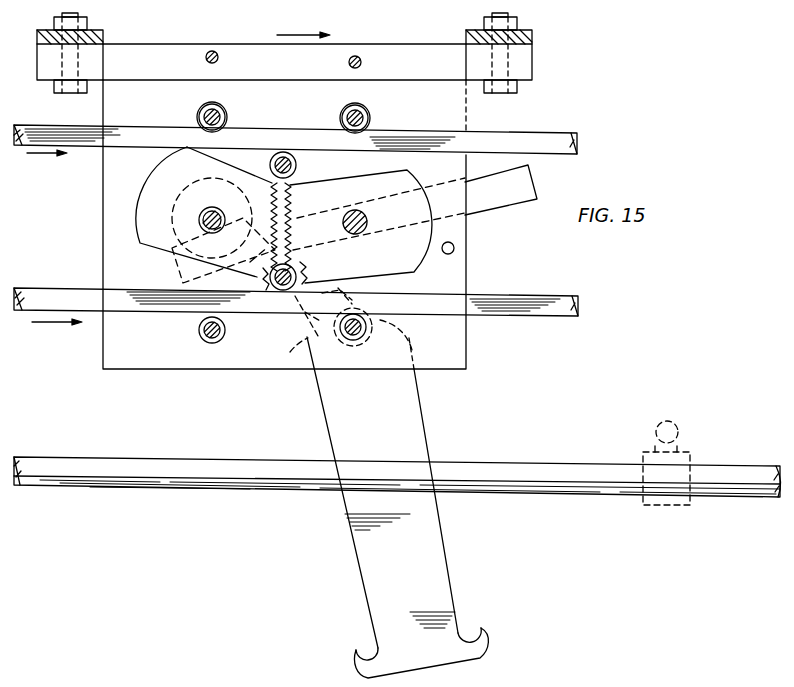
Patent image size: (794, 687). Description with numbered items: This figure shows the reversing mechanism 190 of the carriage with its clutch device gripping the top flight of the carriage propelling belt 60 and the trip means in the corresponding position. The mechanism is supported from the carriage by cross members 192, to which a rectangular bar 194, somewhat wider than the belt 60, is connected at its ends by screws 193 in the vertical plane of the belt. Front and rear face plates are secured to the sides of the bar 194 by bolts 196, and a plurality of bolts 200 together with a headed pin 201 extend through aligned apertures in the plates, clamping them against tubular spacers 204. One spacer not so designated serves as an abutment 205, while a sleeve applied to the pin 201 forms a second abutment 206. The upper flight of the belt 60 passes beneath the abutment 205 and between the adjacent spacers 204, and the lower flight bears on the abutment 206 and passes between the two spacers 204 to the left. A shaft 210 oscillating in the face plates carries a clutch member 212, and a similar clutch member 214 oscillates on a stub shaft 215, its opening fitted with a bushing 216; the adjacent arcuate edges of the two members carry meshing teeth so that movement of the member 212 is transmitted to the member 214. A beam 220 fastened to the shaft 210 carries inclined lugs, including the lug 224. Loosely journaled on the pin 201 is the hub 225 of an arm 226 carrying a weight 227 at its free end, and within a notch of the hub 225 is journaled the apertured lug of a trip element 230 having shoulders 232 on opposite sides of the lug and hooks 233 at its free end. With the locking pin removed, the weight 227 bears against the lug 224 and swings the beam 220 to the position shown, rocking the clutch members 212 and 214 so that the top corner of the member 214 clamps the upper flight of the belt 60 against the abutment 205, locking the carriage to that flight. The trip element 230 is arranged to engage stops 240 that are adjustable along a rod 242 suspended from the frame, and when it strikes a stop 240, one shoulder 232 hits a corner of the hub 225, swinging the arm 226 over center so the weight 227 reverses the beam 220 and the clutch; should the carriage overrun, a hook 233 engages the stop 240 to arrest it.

The carriage propelling belt 60 is at (563, 135).
The reversing mechanism 190 is at (472, 272).
The cross members 192 is at (103, 31).
The screws 193 is at (68, 93).
The rectangular bar 194 is at (383, 44).
The bolts 196 is at (212, 51).
The bolts 200 is at (283, 152).
The headed pin 201 is at (356, 342).
The spacers 204 is at (371, 117).
The abutment 205 is at (197, 112).
The second abutment 206 is at (368, 323).
The shaft 210 is at (366, 223).
The clutch member 212 is at (408, 267).
The clutch member 214 is at (170, 173).
The stub shaft 215 is at (199, 220).
The bushing 216 is at (219, 207).
The beam 220 is at (515, 198).
The lug 224 is at (194, 250).
The hub 225 is at (340, 299).
The arm 226 is at (315, 312).
The weight 227 is at (167, 198).
The trip element 230 is at (423, 437).
The shoulders 232 is at (299, 349).
The hooks 233 is at (356, 653).
The stops 240 is at (655, 433).
The rod 242 is at (275, 486).